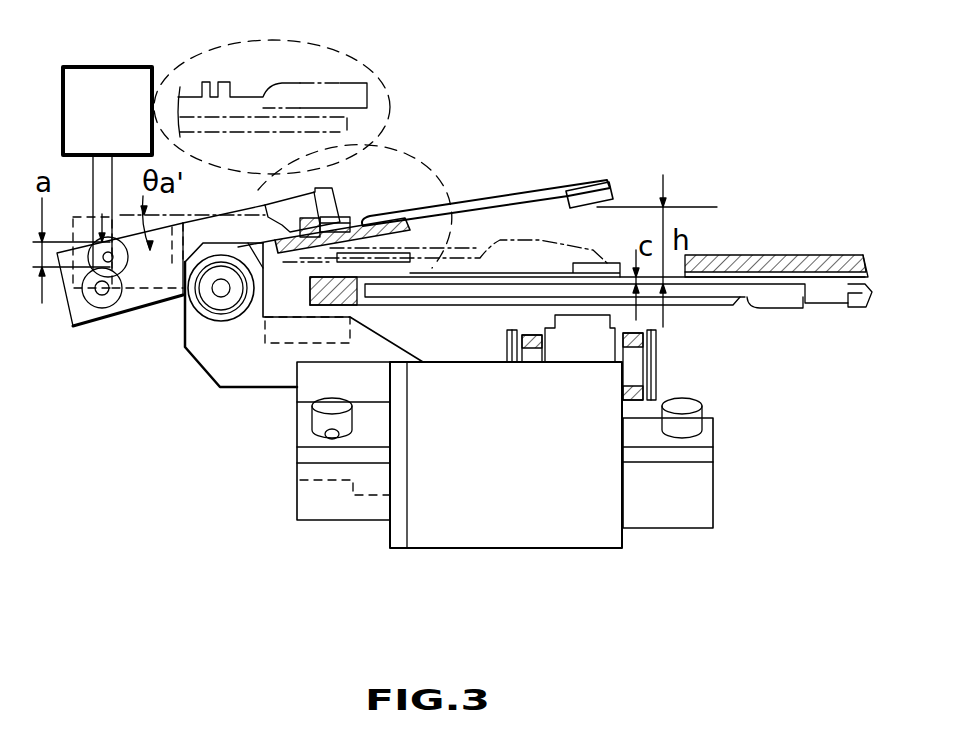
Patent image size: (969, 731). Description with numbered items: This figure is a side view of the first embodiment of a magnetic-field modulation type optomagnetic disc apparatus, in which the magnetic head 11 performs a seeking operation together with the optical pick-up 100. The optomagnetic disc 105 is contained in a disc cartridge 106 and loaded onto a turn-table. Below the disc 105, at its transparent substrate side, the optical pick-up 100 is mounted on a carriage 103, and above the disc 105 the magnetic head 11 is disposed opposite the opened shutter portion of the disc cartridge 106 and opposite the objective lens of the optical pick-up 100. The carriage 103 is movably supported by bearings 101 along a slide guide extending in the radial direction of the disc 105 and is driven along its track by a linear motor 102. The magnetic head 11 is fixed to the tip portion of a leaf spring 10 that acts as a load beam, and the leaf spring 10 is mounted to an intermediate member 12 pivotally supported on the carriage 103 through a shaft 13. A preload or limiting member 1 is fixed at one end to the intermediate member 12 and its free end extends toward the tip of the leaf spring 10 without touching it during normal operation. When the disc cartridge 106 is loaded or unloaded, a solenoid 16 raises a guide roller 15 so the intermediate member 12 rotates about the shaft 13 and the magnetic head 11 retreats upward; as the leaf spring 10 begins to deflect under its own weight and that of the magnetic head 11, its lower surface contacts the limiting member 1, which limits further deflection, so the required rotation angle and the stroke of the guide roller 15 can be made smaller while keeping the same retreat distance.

The limiting member 1 is at (293, 250).
The leaf spring 10 is at (372, 72).
The magnetic head 11 is at (607, 266).
The intermediate member 12 is at (220, 232).
The shaft 13 is at (213, 293).
The guide roller 15 is at (102, 257).
The solenoid 16 is at (125, 65).
The optical pick-up 100 is at (612, 317).
The bearings 101 is at (313, 408).
The linear motor 102 is at (588, 533).
The carriage 103 is at (700, 496).
The optomagnetic disc 105 is at (480, 287).
The disc cartridge 106 is at (780, 258).